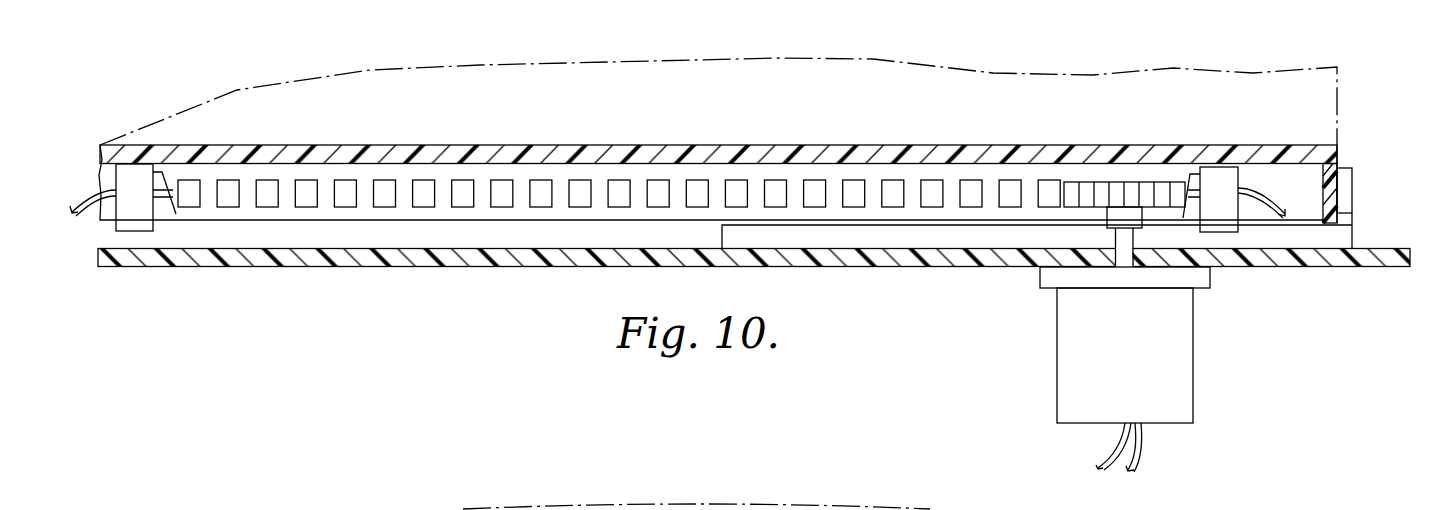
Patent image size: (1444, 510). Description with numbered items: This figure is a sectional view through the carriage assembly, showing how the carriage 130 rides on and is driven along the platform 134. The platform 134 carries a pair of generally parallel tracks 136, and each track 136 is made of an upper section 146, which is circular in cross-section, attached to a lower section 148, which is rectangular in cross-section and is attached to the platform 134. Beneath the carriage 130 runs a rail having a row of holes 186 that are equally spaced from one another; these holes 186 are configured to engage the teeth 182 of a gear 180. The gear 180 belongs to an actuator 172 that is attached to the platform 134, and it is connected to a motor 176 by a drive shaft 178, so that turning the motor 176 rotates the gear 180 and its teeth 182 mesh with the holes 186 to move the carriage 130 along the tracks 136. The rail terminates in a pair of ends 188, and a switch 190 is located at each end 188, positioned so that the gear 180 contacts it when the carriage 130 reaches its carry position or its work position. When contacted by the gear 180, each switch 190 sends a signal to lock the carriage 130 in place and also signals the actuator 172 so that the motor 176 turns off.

The carriage 130 is at (385, 153).
The platform 134 is at (297, 258).
The track 136 is at (1352, 207).
The upper section 146 is at (1347, 183).
The lower section 148 is at (1327, 240).
The actuator 172 is at (1075, 376).
The motor 176 is at (1182, 387).
The drive shaft 178 is at (1125, 257).
The gear 180 is at (1112, 188).
The teeth 182 is at (1077, 190).
The holes 186 is at (850, 193).
The ends 188 is at (162, 215).
The switch 190 is at (173, 177).